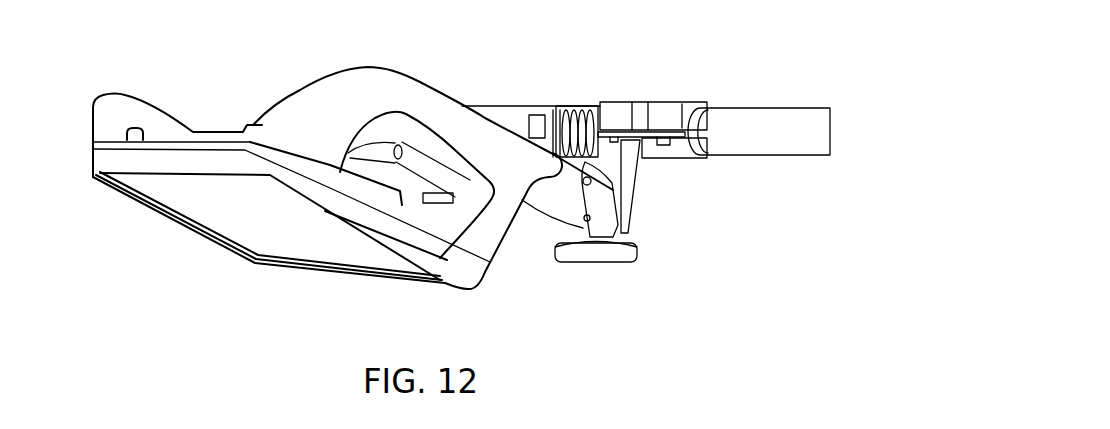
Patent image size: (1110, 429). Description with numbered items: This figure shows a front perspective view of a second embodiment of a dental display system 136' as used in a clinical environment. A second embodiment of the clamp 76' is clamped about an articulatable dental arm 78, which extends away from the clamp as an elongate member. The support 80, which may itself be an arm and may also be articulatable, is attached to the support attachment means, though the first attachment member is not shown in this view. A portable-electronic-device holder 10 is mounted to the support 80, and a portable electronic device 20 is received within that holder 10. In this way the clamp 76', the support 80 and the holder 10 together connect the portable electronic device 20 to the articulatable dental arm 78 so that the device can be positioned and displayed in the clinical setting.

The portable-electronic-device holder 10 is at (175, 237).
The portable electronic device 20 is at (283, 238).
The support 80 is at (518, 137).
The clamp 76' is at (652, 97).
The articulatable dental arm 78 is at (738, 108).
The dental display system 136' is at (595, 238).